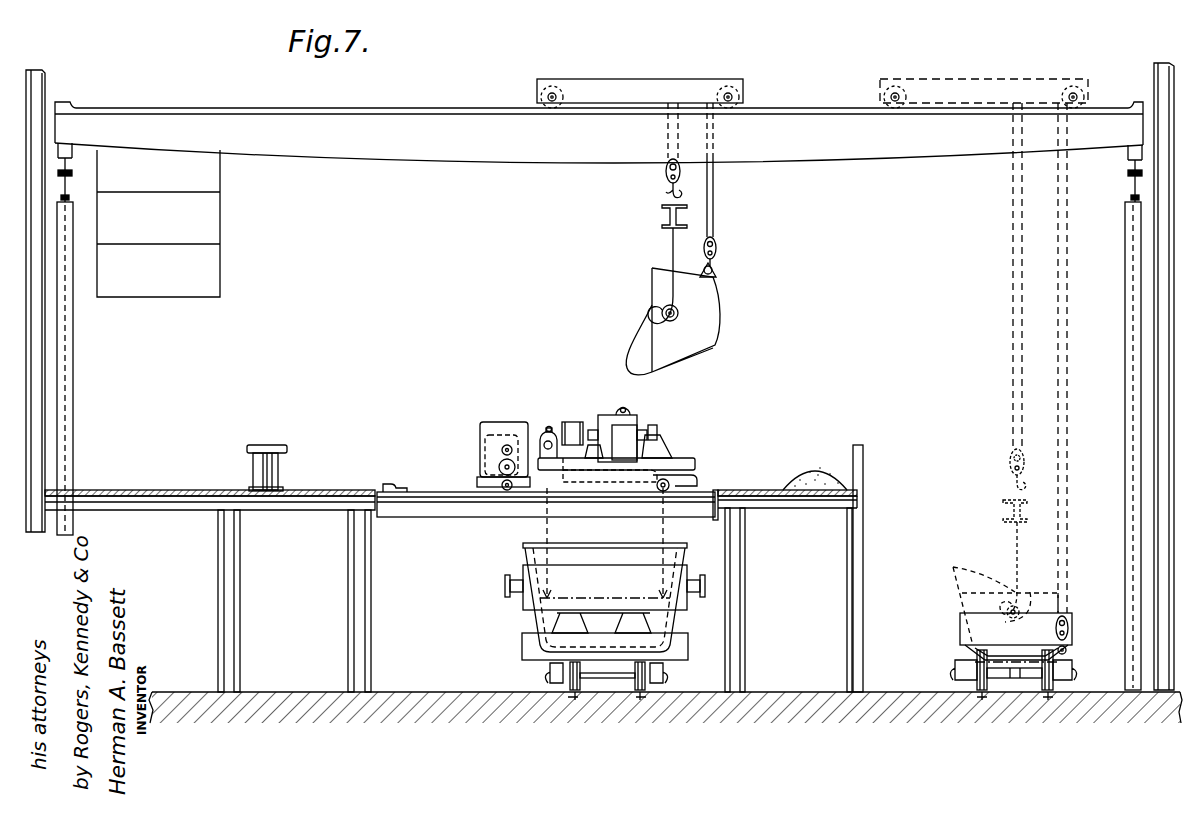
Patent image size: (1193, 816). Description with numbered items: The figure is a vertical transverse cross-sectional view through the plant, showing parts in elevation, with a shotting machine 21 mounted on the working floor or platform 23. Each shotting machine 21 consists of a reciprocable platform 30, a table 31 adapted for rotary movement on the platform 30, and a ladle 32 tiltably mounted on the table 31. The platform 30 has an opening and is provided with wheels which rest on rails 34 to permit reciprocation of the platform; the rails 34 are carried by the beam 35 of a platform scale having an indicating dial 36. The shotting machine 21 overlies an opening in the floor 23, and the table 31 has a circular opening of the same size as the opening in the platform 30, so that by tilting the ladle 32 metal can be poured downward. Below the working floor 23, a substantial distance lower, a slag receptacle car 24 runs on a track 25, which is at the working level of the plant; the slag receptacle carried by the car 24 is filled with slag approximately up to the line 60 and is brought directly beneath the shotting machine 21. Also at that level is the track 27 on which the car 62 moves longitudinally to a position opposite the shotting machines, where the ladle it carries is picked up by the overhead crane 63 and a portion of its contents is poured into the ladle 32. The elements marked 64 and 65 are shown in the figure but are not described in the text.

The shotting machine 21 is at (480, 452).
The working floor or platform 23 is at (314, 489).
The slag receptacle car 24 is at (536, 620).
The track 25 is at (640, 700).
The track 27 is at (1048, 700).
The reciprocable platform 30 is at (691, 482).
The table 31 is at (683, 458).
The ladle 32 is at (643, 420).
The rails 34 is at (418, 492).
The beam 35 is at (427, 513).
The indicating dial 36 is at (266, 440).
The line 60 is at (595, 601).
The car 62 is at (965, 624).
The overhead crane 63 is at (796, 153).
The hoisting cable 64 is at (665, 528).
The hoisting cable 65 is at (547, 528).